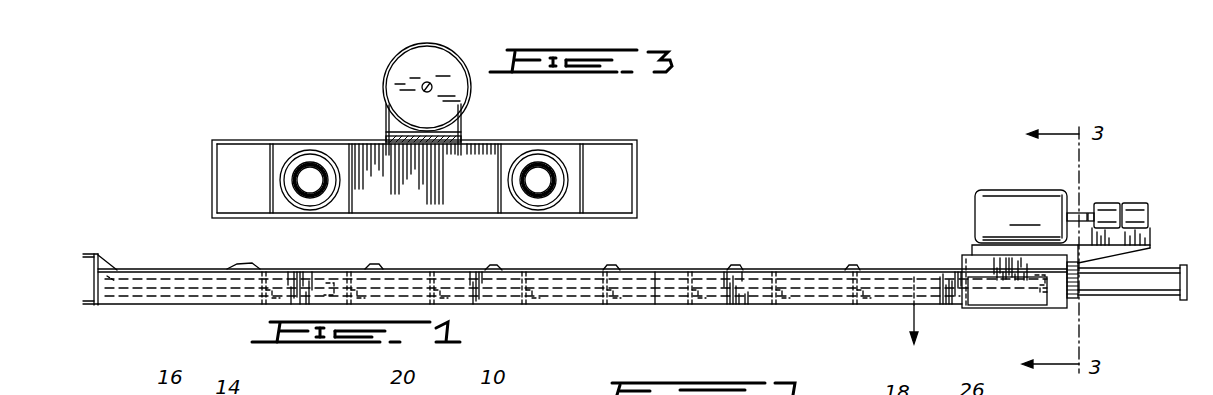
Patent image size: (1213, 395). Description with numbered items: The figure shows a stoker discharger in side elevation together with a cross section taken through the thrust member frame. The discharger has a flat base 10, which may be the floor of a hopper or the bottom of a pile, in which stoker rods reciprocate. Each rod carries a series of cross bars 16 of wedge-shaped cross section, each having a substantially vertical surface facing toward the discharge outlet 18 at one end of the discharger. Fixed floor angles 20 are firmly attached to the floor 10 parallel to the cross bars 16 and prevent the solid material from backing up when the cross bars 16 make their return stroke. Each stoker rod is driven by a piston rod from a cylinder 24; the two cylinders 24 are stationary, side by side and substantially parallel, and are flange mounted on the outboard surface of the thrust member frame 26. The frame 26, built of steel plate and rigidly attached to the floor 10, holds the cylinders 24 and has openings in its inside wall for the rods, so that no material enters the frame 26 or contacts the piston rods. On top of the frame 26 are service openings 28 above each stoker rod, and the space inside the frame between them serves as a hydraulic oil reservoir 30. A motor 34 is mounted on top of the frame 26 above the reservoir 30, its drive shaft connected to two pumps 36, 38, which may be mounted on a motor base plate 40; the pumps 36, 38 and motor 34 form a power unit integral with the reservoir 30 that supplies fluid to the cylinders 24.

In FIG. 1, the flat base 10 is at (463, 268).
In FIG. 1, the cross bars 16 is at (493, 262).
In FIG. 1, the discharge outlet 18 is at (878, 295).
In FIG. 1, the floor angles 20 is at (267, 268).
In FIG. 3, the cylinder 24 is at (303, 168).
In FIG. 1, the cylinder 24 is at (1127, 283).
In FIG. 3, the thrust member frame 26 is at (250, 218).
In FIG. 1, the thrust member frame 26 is at (975, 260).
In FIG. 3, the opening 28 is at (338, 153).
In FIG. 3, the hydraulic oil reservoir 30 is at (387, 193).
In FIG. 3, the motor 34 is at (400, 78).
In FIG. 1, the motor 34 is at (992, 198).
In FIG. 1, the pump 36 is at (1105, 205).
In FIG. 1, the pump 38 is at (1142, 210).
In FIG. 3, the motor base plate 40 is at (465, 138).
In FIG. 1, the motor base plate 40 is at (1147, 238).